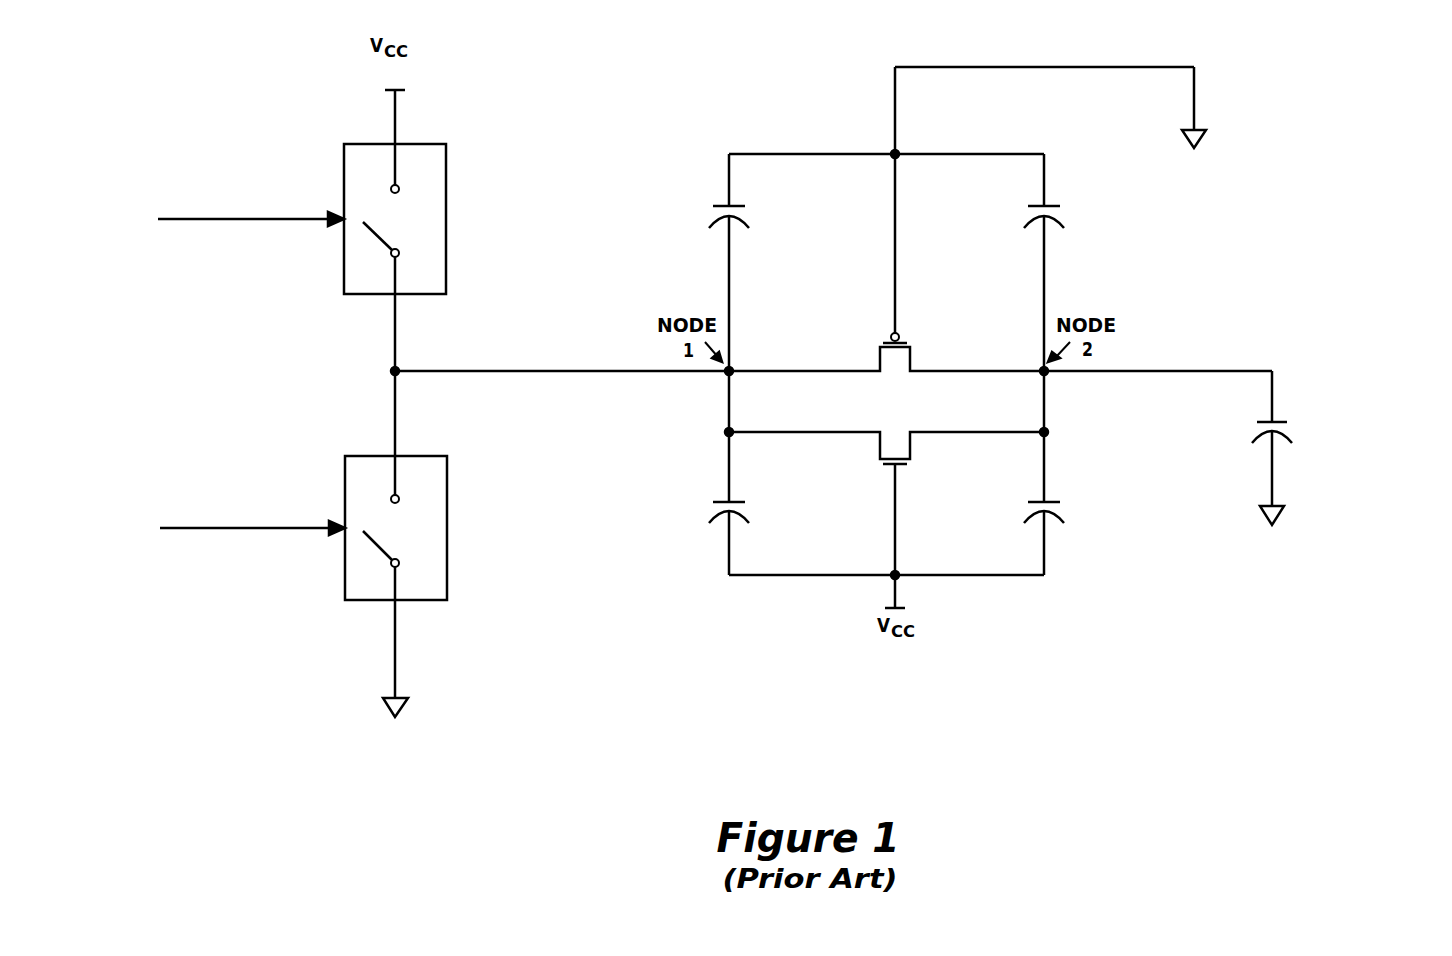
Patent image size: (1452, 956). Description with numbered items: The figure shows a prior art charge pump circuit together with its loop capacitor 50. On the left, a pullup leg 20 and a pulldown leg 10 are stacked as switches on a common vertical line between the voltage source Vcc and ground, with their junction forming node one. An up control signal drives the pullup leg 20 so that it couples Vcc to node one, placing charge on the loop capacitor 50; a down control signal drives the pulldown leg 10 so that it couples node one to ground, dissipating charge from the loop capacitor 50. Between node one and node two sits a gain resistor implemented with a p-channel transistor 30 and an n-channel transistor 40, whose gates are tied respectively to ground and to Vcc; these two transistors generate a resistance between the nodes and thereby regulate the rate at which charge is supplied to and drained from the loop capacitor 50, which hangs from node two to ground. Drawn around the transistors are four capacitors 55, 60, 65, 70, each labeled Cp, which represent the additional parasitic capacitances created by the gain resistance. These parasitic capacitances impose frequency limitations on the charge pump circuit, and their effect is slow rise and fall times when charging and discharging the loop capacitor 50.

The pulldown leg 10 is at (370, 544).
The pullup leg 20 is at (354, 257).
The p-channel transistor 30 is at (886, 220).
The n-channel transistor 40 is at (886, 520).
The loop capacitor 50 is at (1335, 448).
The capacitor 55 is at (1041, 210).
The capacitor 60 is at (733, 211).
The capacitor 65 is at (733, 509).
The capacitor 70 is at (1041, 508).